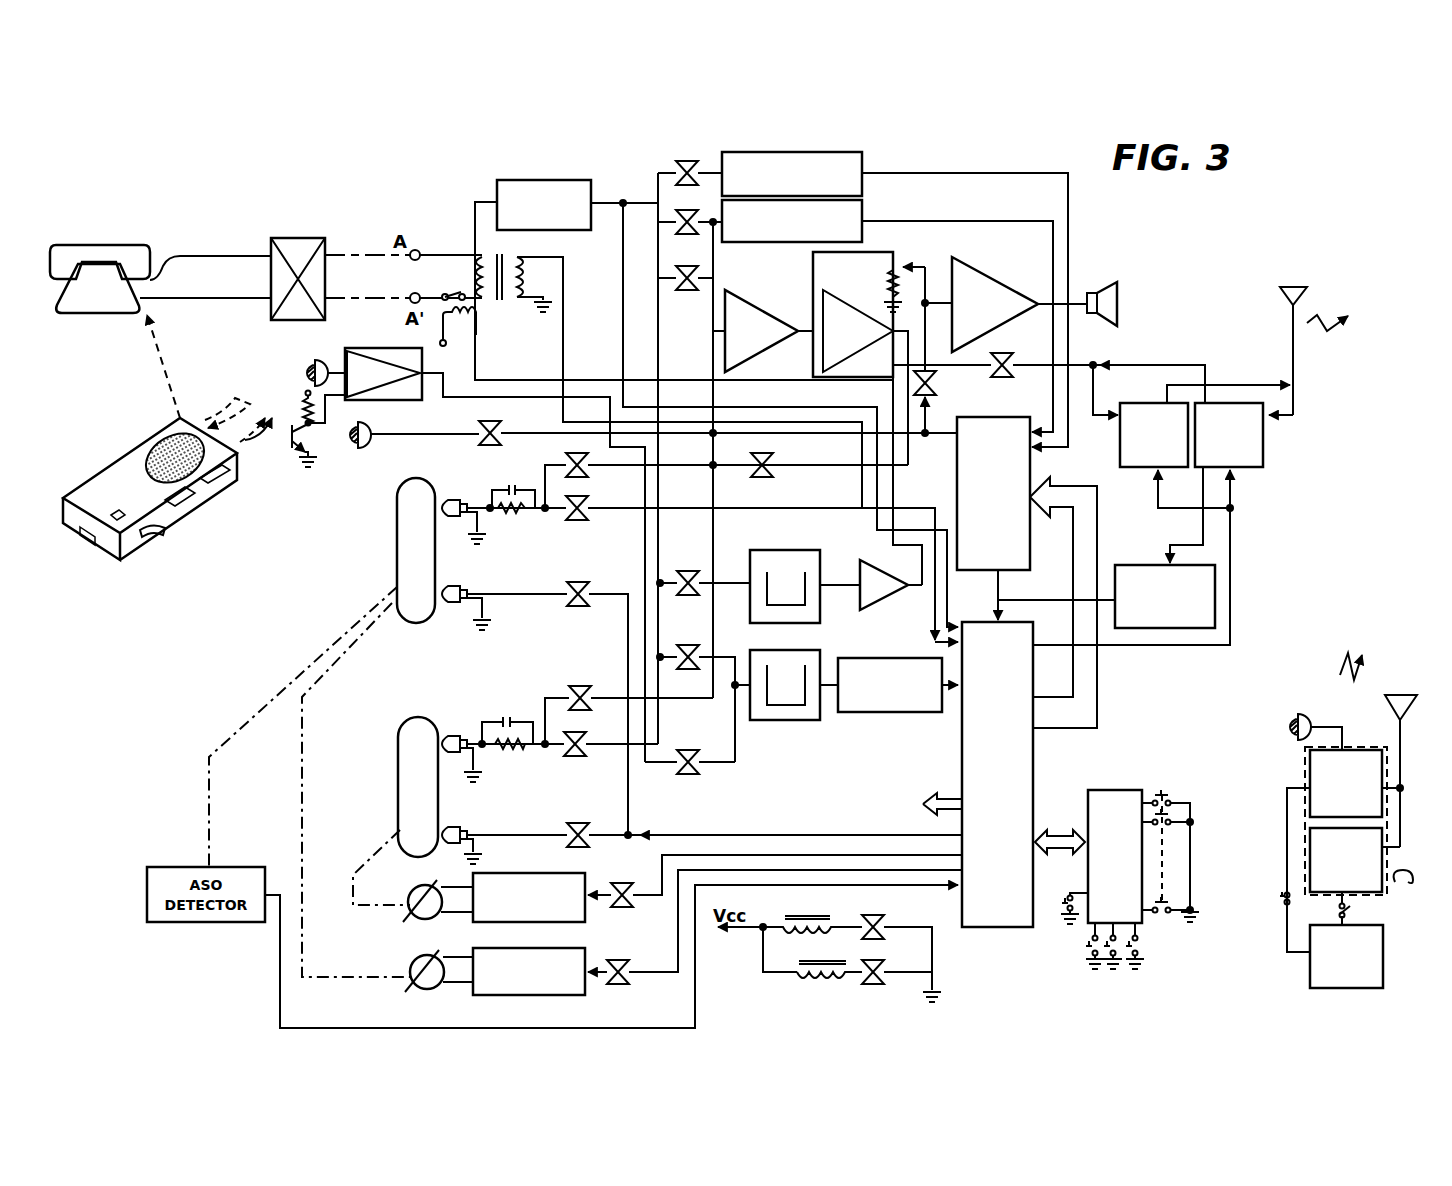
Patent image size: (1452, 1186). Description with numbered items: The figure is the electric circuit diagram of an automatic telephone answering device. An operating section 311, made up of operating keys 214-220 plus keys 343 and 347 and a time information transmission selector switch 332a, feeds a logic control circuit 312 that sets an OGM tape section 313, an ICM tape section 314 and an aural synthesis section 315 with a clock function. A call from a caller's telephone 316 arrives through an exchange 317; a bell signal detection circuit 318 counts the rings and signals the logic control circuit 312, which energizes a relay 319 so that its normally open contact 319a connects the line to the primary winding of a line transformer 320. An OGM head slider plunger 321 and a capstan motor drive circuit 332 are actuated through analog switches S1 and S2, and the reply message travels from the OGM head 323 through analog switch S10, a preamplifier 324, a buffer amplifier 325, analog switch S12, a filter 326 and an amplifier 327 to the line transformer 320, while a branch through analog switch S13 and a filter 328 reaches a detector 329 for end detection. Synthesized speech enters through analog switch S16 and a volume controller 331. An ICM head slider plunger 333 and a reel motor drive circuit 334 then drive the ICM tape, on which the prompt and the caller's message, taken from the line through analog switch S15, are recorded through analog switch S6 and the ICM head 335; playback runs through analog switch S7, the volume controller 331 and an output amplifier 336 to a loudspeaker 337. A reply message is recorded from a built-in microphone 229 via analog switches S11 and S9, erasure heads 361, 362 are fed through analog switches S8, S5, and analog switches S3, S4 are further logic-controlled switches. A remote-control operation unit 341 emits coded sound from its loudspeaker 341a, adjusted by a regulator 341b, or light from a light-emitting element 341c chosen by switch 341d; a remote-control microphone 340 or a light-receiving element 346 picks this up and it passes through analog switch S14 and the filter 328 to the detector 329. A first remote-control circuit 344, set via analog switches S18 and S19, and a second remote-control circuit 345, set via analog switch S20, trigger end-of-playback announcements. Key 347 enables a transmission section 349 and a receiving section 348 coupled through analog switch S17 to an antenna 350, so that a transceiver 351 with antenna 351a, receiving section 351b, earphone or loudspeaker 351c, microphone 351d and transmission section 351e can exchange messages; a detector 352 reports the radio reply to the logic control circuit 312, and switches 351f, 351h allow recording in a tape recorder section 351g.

The built-in microphone 229 is at (362, 450).
The operating section 311 is at (1240, 840).
The logic control circuit 312 is at (1015, 930).
The OGM tape section 313 is at (396, 548).
The ICM tape section 314 is at (398, 797).
The aural synthesis section 315 is at (1022, 570).
The telephone 316 is at (110, 318).
The exchange 317 is at (271, 305).
The bell signal detection circuit 318 is at (497, 184).
The relay 319 is at (476, 335).
The normally open contact 319a is at (450, 290).
The line transformer 320 is at (669, 381).
The OGM head slider plunger 321 is at (800, 915).
The OGM head 323 is at (465, 525).
The preamplifier 324 is at (758, 303).
The buffer amplifier 325 is at (862, 308).
The filter 326 is at (792, 550).
The amplifier 327 is at (908, 593).
The filter 328 is at (806, 722).
The detector 329 is at (898, 715).
The volume controller 331 is at (895, 262).
The capstan motor drive circuit 332 is at (588, 985).
The time information transmission selector switch 332a is at (1093, 968).
The ICM head slider plunger 333 is at (808, 984).
The reel motor drive circuit 334 is at (553, 873).
The ICM head 335 is at (468, 755).
The output amplifier 336 is at (992, 275).
The loudspeaker 337 is at (1120, 300).
The remote-control microphone 340 is at (305, 365).
The remote-control operation unit 341 is at (135, 558).
The loudspeaker 341a is at (160, 462).
The regulator 341b is at (165, 538).
The light-emitting element 341c is at (75, 528).
The switch 341d is at (110, 512).
The operation key 343 is at (1140, 950).
The first remote-control circuit 344 is at (742, 242).
The second remote-control circuit 345 is at (803, 140).
The light-receiving element 346 is at (297, 456).
The operation key 347 is at (1068, 926).
The receiving section 348 is at (1266, 455).
The transmission section 349 is at (1120, 455).
The antenna 350 is at (1296, 286).
The transceiver 351 is at (1305, 762).
The antenna 351a is at (1400, 692).
The receiving section 351b is at (1305, 845).
The earphones or loudspeaker 351c is at (1393, 882).
The microphone 351d is at (1292, 715).
The transmission section 351e is at (1364, 750).
The switch 351f is at (1383, 945).
The tape recorder section 351g is at (1362, 990).
The switch 351h is at (1280, 905).
The detector 352 is at (1152, 566).
The erasure head 361 is at (462, 612).
The erasure head 362 is at (465, 828).
The operating keys 214-220 is at (1128, 770).
The analog switch S1 is at (897, 939).
The analog switch S2 is at (901, 976).
The analog switch S3 is at (775, 927).
The analog switch S4 is at (775, 898).
The analog switch S5 is at (714, 823).
The analog switch S6 is at (603, 737).
The analog switch S7 is at (629, 701).
The analog switch S8 is at (549, 705).
The analog switch S9 is at (753, 569).
The analog switch S10 is at (710, 475).
The analog switch S11 is at (664, 424).
The analog switch S12 is at (703, 571).
The analog switch S13 is at (703, 689).
The analog switch S14 is at (690, 778).
The analog switch S15 is at (784, 459).
The analog switch S16 is at (945, 402).
The analog switch S17 is at (1049, 375).
The analog switch S18 is at (678, 231).
The analog switch S19 is at (685, 296).
The analog switch S20 is at (676, 168).